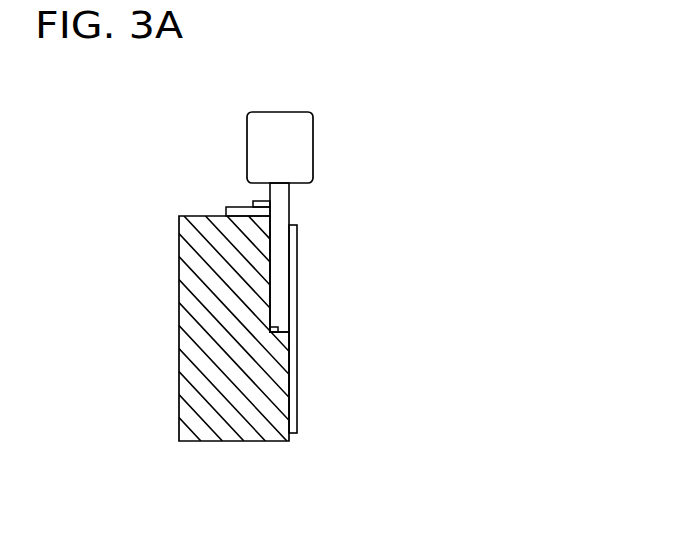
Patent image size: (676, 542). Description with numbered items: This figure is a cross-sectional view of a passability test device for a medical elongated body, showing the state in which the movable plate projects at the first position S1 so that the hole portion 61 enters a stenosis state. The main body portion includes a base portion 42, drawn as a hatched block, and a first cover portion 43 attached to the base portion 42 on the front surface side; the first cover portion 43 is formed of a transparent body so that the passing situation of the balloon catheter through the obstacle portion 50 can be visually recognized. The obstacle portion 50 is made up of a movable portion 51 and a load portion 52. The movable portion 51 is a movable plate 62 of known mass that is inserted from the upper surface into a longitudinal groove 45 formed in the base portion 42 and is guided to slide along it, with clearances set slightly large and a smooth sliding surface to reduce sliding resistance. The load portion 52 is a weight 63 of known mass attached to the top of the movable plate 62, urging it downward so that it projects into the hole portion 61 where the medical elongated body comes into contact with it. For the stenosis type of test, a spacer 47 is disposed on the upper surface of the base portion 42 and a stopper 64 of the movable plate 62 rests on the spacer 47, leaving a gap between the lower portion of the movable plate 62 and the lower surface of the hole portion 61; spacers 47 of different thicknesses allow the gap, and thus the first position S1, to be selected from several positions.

The base portion 42 is at (236, 422).
The first cover portion 43 is at (291, 415).
The longitudinal groove 45 is at (273, 276).
The spacer 47 is at (227, 210).
The obstacle portion 50 is at (447, 152).
The movable portion 51 is at (382, 201).
The load portion 52 is at (382, 162).
The hole portion 61 is at (280, 328).
The movable plate 62 is at (282, 214).
The weight 63 is at (307, 163).
The stopper 64 is at (252, 202).
The first position S1 is at (378, 132).